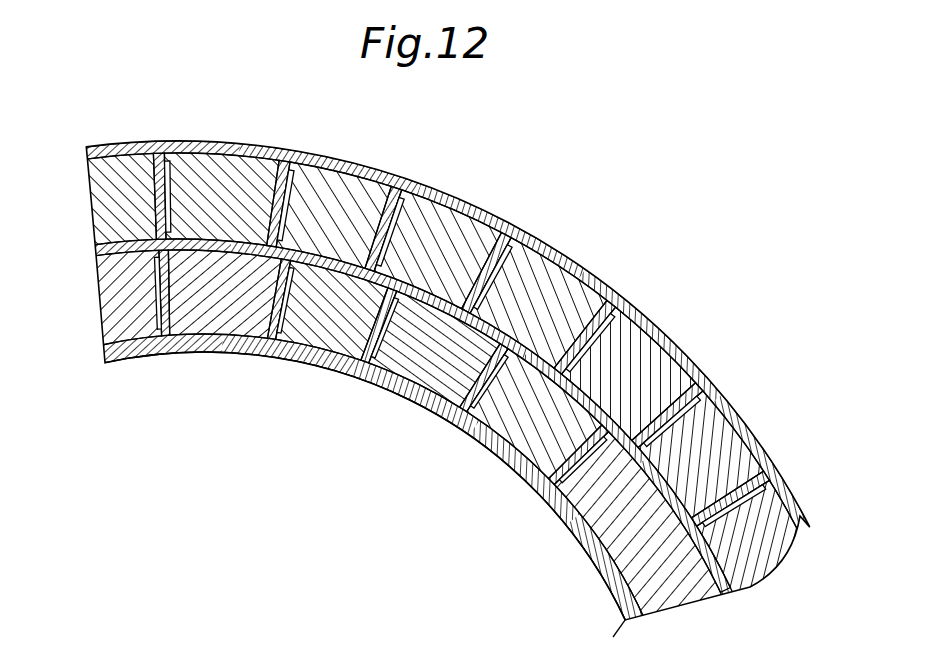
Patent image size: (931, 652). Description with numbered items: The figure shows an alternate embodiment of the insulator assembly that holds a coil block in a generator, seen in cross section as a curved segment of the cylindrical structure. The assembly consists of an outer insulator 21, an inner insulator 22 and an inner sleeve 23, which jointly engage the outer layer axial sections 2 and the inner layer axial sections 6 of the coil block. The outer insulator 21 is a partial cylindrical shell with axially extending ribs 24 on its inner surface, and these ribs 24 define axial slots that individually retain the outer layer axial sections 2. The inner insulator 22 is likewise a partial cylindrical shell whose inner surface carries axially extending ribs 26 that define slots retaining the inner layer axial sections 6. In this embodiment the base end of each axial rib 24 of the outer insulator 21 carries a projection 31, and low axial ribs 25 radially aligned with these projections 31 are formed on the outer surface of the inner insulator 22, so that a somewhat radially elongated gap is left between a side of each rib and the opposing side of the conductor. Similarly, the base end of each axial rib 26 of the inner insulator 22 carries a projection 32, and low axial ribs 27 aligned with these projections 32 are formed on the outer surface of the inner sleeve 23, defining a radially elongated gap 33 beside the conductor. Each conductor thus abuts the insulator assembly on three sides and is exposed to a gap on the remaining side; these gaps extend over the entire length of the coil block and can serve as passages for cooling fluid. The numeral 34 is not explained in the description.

The outer layer axial section 2 is at (207, 150).
The inner layer axial section 6 is at (199, 336).
The outer insulator 21 is at (298, 160).
The inner insulator 22 is at (346, 172).
The inner sleeve 23 is at (292, 358).
The axial rib 24 is at (510, 275).
The low axial rib 25 is at (590, 356).
The axial rib 26 is at (400, 375).
The low axial rib 27 is at (490, 403).
The projection 31 is at (680, 416).
The projection 32 is at (530, 470).
The gap 33 is at (578, 518).
The laminated block 34 is at (672, 418).